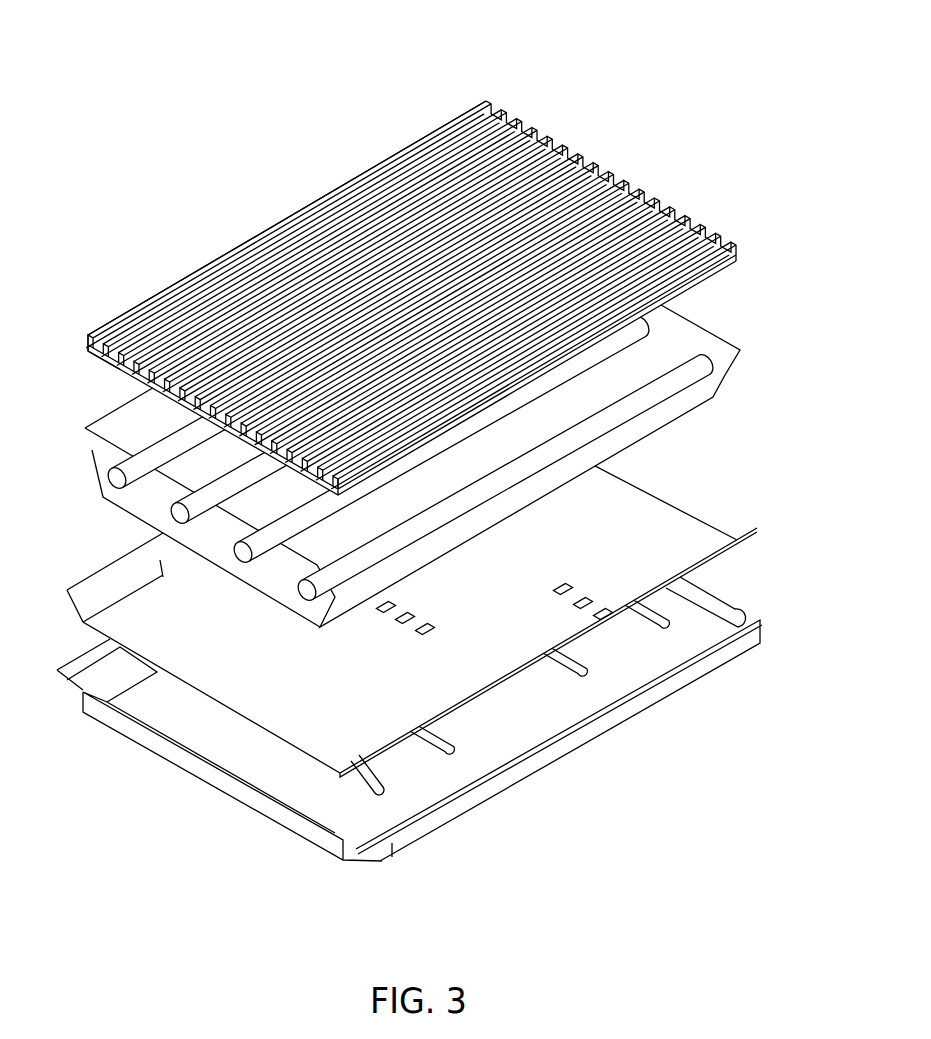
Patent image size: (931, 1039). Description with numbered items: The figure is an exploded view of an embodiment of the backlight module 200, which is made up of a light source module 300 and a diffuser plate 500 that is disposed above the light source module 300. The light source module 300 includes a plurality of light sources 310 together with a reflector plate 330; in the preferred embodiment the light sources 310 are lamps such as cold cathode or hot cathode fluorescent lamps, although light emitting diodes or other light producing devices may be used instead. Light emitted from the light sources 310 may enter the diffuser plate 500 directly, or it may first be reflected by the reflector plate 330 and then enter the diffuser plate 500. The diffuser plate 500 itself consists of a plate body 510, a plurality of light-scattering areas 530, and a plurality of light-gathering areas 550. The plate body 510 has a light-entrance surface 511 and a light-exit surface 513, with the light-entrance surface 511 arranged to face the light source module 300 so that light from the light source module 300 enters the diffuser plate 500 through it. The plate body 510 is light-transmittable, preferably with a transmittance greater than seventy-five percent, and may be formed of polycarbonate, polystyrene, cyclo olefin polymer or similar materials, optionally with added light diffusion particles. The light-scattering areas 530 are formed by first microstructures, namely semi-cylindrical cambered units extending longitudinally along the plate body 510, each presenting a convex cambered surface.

The backlight module 200 is at (368, 76).
The diffuser plate 500 is at (408, 289).
The light-gathering areas 550 is at (549, 130).
The light-scattering areas 530 is at (712, 222).
The plate body 510 is at (740, 257).
The light-entrance surface 511 is at (70, 350).
The light-exit surface 513 is at (210, 259).
The light source module 300 is at (435, 528).
The light sources 310 is at (97, 455).
The reflector plate 330 is at (160, 560).